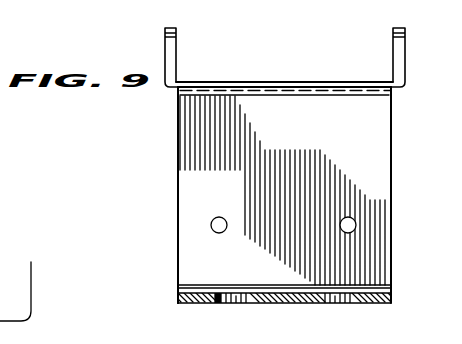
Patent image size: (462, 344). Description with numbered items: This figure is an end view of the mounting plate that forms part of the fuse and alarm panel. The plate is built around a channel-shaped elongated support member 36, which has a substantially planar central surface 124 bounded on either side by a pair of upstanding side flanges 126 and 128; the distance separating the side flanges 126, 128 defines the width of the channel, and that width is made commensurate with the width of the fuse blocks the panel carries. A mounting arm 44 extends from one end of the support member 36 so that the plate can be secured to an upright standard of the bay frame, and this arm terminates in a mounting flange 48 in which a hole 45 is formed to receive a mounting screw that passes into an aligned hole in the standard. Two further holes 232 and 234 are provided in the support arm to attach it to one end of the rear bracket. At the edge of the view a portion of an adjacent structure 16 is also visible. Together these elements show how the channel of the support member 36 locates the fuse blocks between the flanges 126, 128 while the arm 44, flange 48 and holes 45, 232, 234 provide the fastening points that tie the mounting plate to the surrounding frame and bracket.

The housing 16 is at (15, 288).
The channel-shaped elongated support member 36 is at (276, 80).
The second mounting arm 44 is at (188, 148).
The hole 45 is at (337, 303).
The mounting flange 48 is at (177, 298).
The central surface 124 is at (298, 81).
The side flange 126 is at (175, 54).
The side flange 128 is at (397, 58).
The hole 232 is at (222, 217).
The hole 234 is at (346, 217).